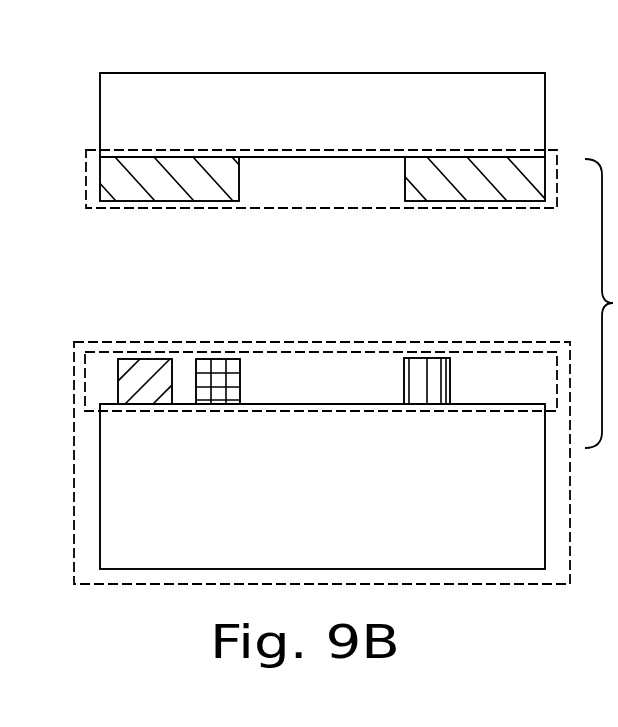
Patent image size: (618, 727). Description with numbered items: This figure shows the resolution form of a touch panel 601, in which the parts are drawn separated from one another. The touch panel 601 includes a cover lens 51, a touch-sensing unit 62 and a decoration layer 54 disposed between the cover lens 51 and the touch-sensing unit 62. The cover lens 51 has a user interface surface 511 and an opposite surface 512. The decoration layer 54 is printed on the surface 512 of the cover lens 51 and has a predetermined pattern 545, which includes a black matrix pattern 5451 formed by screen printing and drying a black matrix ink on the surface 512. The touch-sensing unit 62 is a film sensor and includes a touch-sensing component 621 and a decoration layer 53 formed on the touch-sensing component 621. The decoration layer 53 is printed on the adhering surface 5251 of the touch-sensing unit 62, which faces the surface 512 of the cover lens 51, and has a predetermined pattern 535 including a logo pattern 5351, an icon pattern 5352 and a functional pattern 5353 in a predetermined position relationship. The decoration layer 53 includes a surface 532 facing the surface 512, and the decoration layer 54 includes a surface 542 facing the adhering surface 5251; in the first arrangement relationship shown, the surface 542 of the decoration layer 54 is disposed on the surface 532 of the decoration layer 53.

The touch panel 601 is at (547, 48).
The cover lens 51 is at (135, 117).
The user interface surface 511 is at (255, 73).
The surface 512 is at (311, 160).
The decoration layer 54 is at (85, 200).
The surface 542 is at (174, 217).
The black matrix pattern 5451 is at (170, 203).
The predetermined pattern 545 is at (488, 214).
The decoration layer 53 is at (85, 380).
The logo pattern 5351 is at (152, 367).
The functional pattern 5353 is at (218, 375).
The surface 532 is at (234, 347).
The adhering surface 5251 is at (283, 400).
The predetermined pattern 535 is at (462, 344).
The icon pattern 5352 is at (433, 385).
The touch-sensing unit 62 is at (73, 430).
The touch-sensing component 621 is at (120, 530).